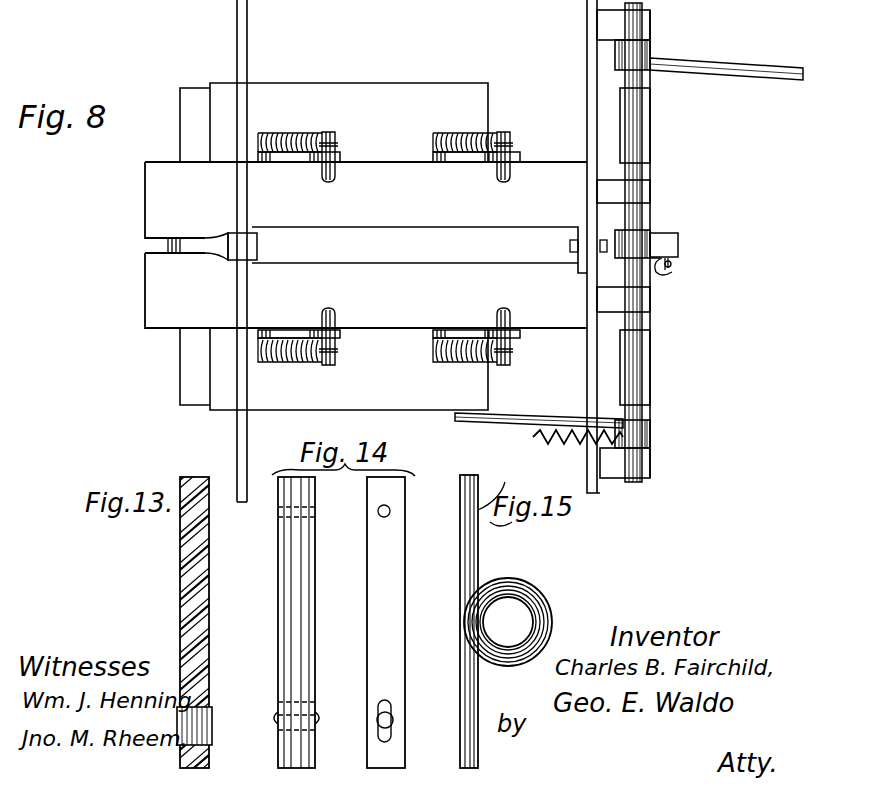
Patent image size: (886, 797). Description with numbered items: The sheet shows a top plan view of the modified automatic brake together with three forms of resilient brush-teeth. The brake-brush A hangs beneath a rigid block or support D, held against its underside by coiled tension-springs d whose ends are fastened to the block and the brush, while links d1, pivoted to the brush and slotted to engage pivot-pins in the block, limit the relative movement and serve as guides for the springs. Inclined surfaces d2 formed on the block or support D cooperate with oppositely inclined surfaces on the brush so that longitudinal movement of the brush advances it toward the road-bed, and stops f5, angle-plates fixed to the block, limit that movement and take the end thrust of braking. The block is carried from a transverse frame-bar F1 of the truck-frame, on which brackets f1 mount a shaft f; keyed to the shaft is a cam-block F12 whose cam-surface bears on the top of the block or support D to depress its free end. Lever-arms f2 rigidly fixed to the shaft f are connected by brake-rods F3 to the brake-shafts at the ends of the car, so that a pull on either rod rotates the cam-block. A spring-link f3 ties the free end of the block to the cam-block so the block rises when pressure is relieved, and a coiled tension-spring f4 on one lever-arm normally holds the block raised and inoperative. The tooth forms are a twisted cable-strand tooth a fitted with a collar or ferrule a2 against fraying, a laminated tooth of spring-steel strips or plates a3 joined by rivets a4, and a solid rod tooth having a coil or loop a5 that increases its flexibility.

In FIG. 8, the brake-brush A is at (370, 246).
In FIG. 8, the block or support D is at (366, 245).
In FIG. 8, the frame-bar F1 is at (390, 250).
In FIG. 8, the cam-block F12 is at (665, 243).
In FIG. 8, the brake-rod F3 is at (726, 72).
In FIG. 8, the coiled tension-spring d is at (298, 134).
In FIG. 8, the link d1 is at (475, 332).
In FIG. 8, the inclined surface d2 is at (345, 157).
In FIG. 8, the shaft f is at (633, 152).
In FIG. 8, the bracket f1 is at (640, 22).
In FIG. 8, the lever-arm f2 is at (652, 50).
In FIG. 8, the spring-link f3 is at (676, 272).
In FIG. 8, the coiled tension-spring f4 is at (577, 453).
In FIG. 8, the stop f5 is at (192, 141).
In FIG. 13, the brush-tooth a is at (180, 586).
In FIG. 13, the collar or ferrule a2 is at (210, 716).
In FIG. 14, the strip or plate a3 is at (397, 600).
In FIG. 14, the rivet a4 is at (286, 510).
In FIG. 14, the coil or loop a5 is at (296, 616).
In FIG. 15, the coil or loop a5 is at (530, 592).